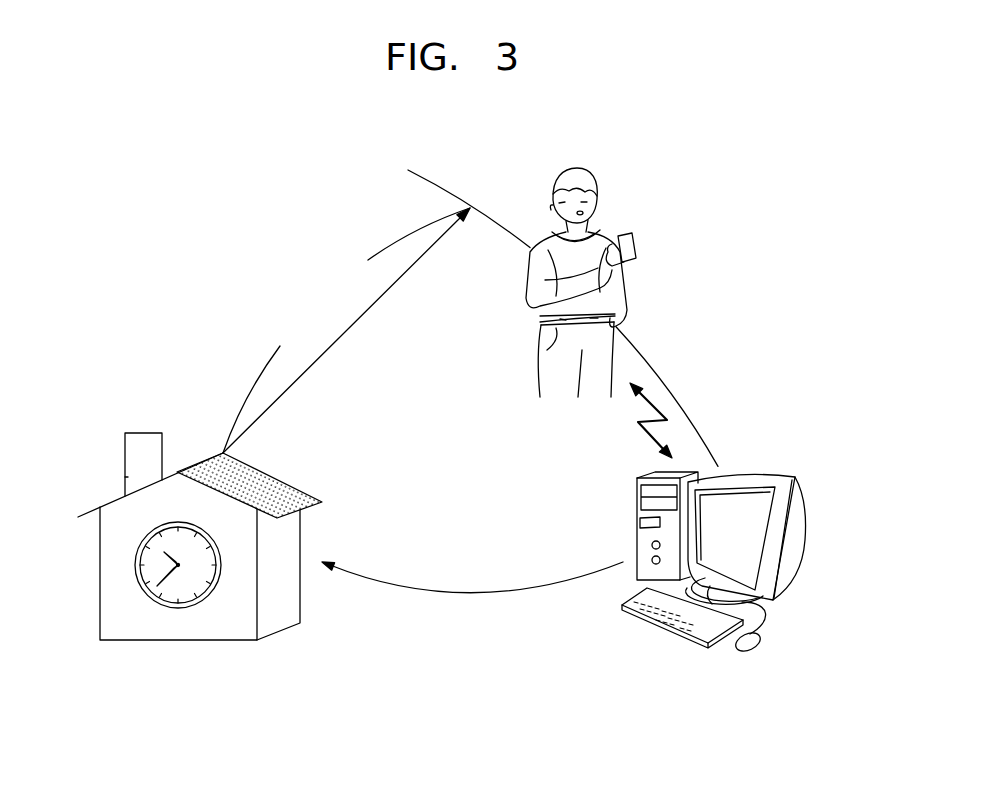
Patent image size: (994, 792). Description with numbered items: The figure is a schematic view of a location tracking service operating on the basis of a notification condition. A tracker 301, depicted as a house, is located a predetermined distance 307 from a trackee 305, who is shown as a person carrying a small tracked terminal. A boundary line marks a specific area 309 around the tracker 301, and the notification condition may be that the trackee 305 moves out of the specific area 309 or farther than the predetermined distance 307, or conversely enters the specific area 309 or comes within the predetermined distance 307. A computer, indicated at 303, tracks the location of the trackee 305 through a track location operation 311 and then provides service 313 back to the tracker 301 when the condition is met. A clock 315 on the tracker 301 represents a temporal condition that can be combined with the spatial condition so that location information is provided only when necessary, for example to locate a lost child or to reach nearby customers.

The tracker 301 is at (182, 568).
The server computer 303 is at (803, 539).
The trackee 305 is at (614, 232).
The predetermined distance 307 is at (348, 331).
The specific area 309 is at (502, 225).
The track location signal 311 is at (640, 436).
The provide service 313 is at (472, 563).
The temporal condition 315 is at (135, 565).